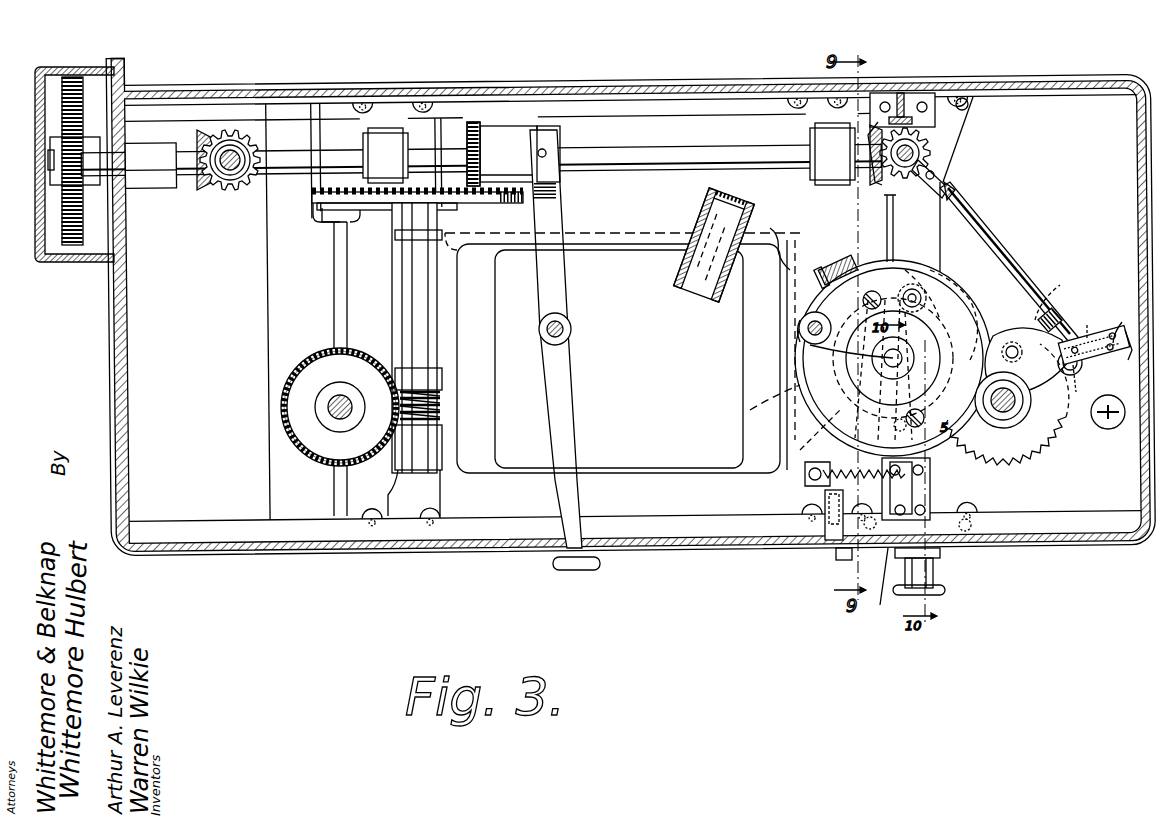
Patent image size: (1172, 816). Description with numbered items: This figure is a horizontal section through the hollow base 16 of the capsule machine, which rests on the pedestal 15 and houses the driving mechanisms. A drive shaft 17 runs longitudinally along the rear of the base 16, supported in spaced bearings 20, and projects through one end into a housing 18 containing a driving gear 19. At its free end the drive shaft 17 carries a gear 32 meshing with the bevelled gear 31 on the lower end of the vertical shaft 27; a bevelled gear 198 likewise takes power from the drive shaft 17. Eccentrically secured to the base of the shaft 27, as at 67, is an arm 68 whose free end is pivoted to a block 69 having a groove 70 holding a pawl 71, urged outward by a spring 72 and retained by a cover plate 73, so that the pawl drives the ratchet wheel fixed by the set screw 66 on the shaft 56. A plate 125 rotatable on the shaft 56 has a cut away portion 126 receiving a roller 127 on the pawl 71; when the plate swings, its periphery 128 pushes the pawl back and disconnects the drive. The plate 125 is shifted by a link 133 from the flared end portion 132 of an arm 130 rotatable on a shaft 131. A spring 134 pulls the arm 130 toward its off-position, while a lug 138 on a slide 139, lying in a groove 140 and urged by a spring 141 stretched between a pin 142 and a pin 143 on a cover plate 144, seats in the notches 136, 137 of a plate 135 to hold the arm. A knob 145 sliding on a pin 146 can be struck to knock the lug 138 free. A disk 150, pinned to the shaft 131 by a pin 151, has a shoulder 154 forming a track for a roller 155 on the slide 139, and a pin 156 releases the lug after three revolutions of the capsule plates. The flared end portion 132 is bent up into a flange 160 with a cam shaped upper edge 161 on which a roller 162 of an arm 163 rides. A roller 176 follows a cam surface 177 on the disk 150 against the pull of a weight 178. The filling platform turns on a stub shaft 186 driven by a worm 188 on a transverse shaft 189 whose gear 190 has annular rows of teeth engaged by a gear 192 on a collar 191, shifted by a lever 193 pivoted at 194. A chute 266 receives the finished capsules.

The pedestal 15 is at (475, 352).
The base 16 is at (180, 540).
The drive shaft 17 is at (645, 150).
The housing 18 is at (52, 238).
The driving gear 19 is at (62, 124).
The bearings 20 is at (392, 145).
The shaft 27 is at (930, 150).
The bevelled gear 31 is at (945, 122).
The gear 32 is at (915, 93).
The shaft 56 is at (1010, 410).
The set screw 66 is at (1045, 445).
The eccentric securing point 67 is at (990, 106).
The arm 68 is at (990, 255).
The block 69 is at (1106, 365).
The groove 70 is at (1082, 385).
The pawl 71 is at (1087, 322).
The spring 72 is at (1124, 324).
The cover plate 73 is at (1105, 335).
The plate 125 is at (1026, 361).
The cut away portion 126 is at (1063, 370).
The roller 127 is at (300, 383).
The periphery 128 is at (1068, 289).
The arm 130 is at (930, 490).
The shaft 131 is at (905, 358).
The flared end portion 132 is at (998, 215).
The link 133 is at (955, 292).
The spring 134 is at (825, 505).
The plate 135 is at (872, 588).
The notch 136 is at (842, 560).
The notch 137 is at (945, 555).
The lug 138 is at (975, 520).
The slide 139 is at (880, 527).
The groove 140 is at (915, 385).
The spring 141 is at (925, 472).
The pin 142 is at (925, 425).
The pin 143 is at (930, 505).
The cover plate 144 is at (855, 480).
The knob 145 is at (940, 595).
The pin 146 is at (940, 580).
The disk 150 is at (820, 428).
The pin 151 is at (918, 338).
The shoulder 154 is at (745, 413).
The roller 155 is at (887, 370).
The pin 156 is at (792, 454).
The flange 160 is at (775, 237).
The cam shaped upper edge 161 is at (845, 240).
The roller 162 is at (880, 290).
The arm 163 is at (893, 225).
The roller 176 is at (808, 328).
The cam surface 177 is at (810, 345).
The weight 178 is at (1112, 430).
The stub shaft 186 is at (318, 420).
The worm 188 is at (440, 416).
The shaft 189 is at (440, 376).
The gear 190 is at (312, 208).
The collar 191 is at (250, 130).
The gear 192 is at (500, 128).
The lever 193 is at (560, 282).
The pivot 194 is at (572, 332).
The bevelled gear 198 is at (200, 128).
The chute 266 is at (712, 290).